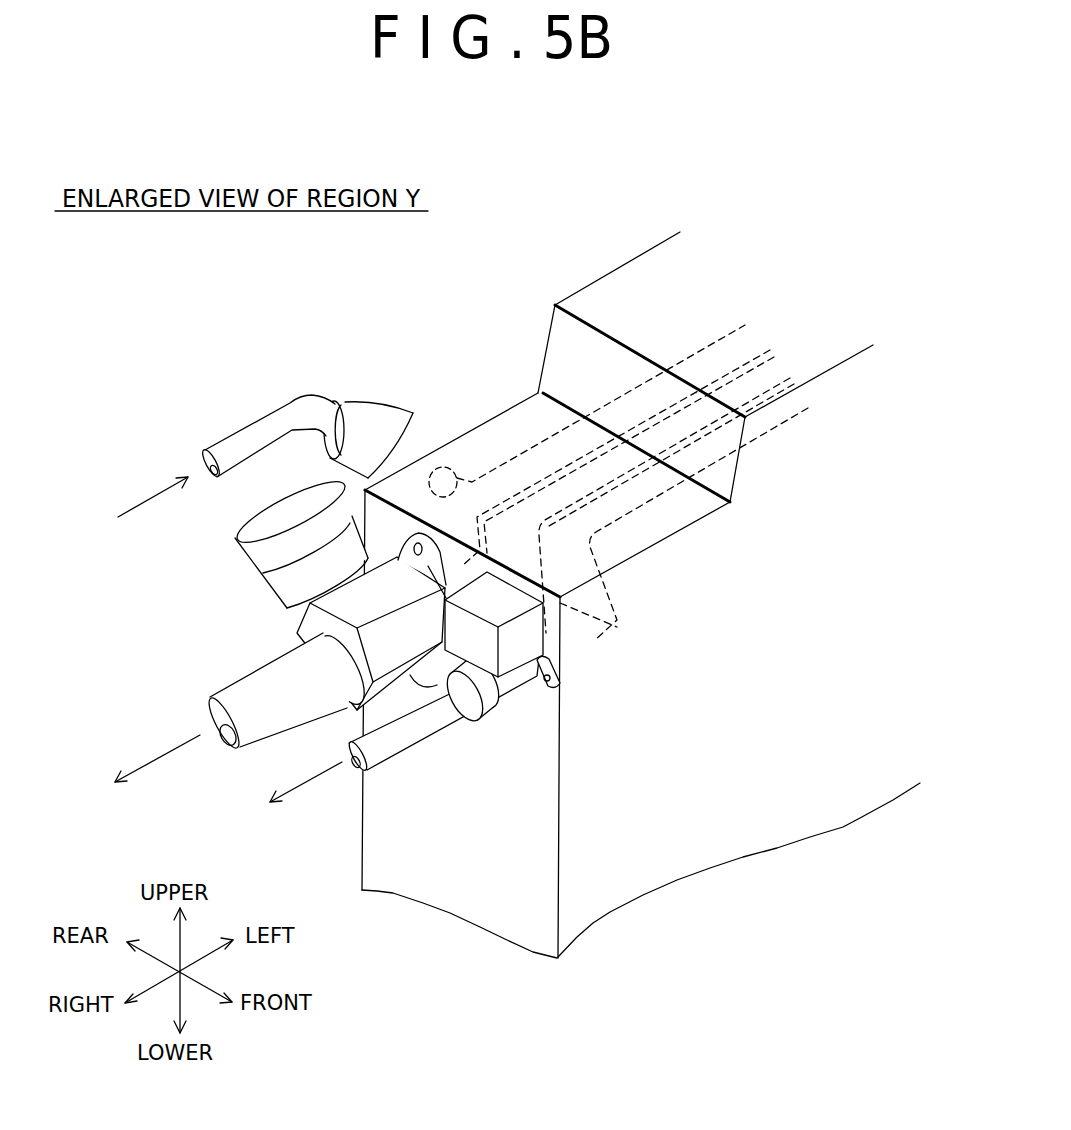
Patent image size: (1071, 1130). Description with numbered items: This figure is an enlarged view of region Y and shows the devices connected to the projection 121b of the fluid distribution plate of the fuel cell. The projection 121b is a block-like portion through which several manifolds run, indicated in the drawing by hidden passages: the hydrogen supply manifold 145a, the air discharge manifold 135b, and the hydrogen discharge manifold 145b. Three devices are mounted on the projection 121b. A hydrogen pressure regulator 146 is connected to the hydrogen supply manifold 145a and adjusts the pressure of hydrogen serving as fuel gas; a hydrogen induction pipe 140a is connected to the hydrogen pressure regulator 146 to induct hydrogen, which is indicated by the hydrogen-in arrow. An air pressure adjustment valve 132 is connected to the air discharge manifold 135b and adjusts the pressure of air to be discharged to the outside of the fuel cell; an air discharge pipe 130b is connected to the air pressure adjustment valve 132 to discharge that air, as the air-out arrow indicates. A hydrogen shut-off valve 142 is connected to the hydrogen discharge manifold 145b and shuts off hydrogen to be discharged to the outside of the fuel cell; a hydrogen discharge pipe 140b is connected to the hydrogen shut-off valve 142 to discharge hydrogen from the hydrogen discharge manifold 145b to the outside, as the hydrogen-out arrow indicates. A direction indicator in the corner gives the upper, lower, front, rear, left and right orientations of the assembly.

The projection 121b is at (505, 440).
The hydrogen supply manifold 145a is at (693, 373).
The air discharge manifold 135b is at (724, 387).
The hydrogen discharge manifold 145b is at (760, 423).
The hydrogen induction pipe 140a is at (270, 423).
The hydrogen pressure regulator 146 is at (378, 413).
The air pressure adjustment valve 132 is at (250, 552).
The air discharge pipe 130b is at (232, 690).
The hydrogen discharge pipe 140b is at (375, 757).
The hydrogen shut-off valve 142 is at (530, 647).